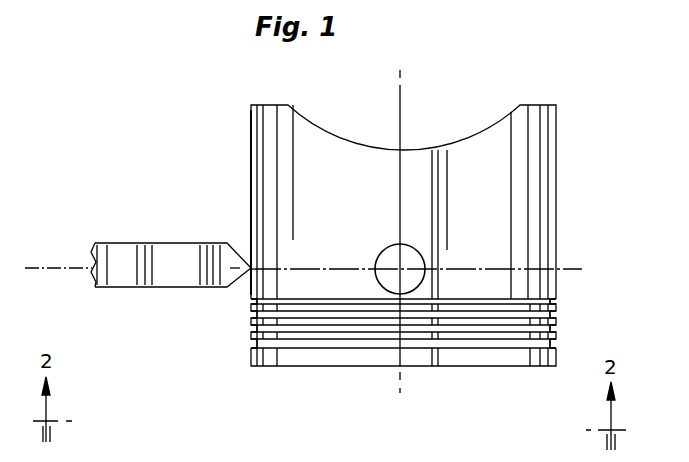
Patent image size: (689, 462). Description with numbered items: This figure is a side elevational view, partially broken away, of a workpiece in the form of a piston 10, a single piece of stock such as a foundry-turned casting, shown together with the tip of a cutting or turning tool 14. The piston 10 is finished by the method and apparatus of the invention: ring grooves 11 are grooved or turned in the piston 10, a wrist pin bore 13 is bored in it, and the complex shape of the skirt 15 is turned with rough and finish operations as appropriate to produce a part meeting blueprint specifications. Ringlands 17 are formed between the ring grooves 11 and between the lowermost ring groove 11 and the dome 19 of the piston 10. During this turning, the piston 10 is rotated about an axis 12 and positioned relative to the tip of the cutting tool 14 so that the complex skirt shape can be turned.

The piston 10 is at (556, 224).
The ring grooves 11 is at (250, 343).
The axis 12 is at (403, 378).
The wrist pin bore 13 is at (418, 260).
The cutting or turning tool 14 is at (157, 287).
The skirt 15 is at (250, 199).
The ringlands 17 is at (556, 357).
The dome 19 is at (313, 369).